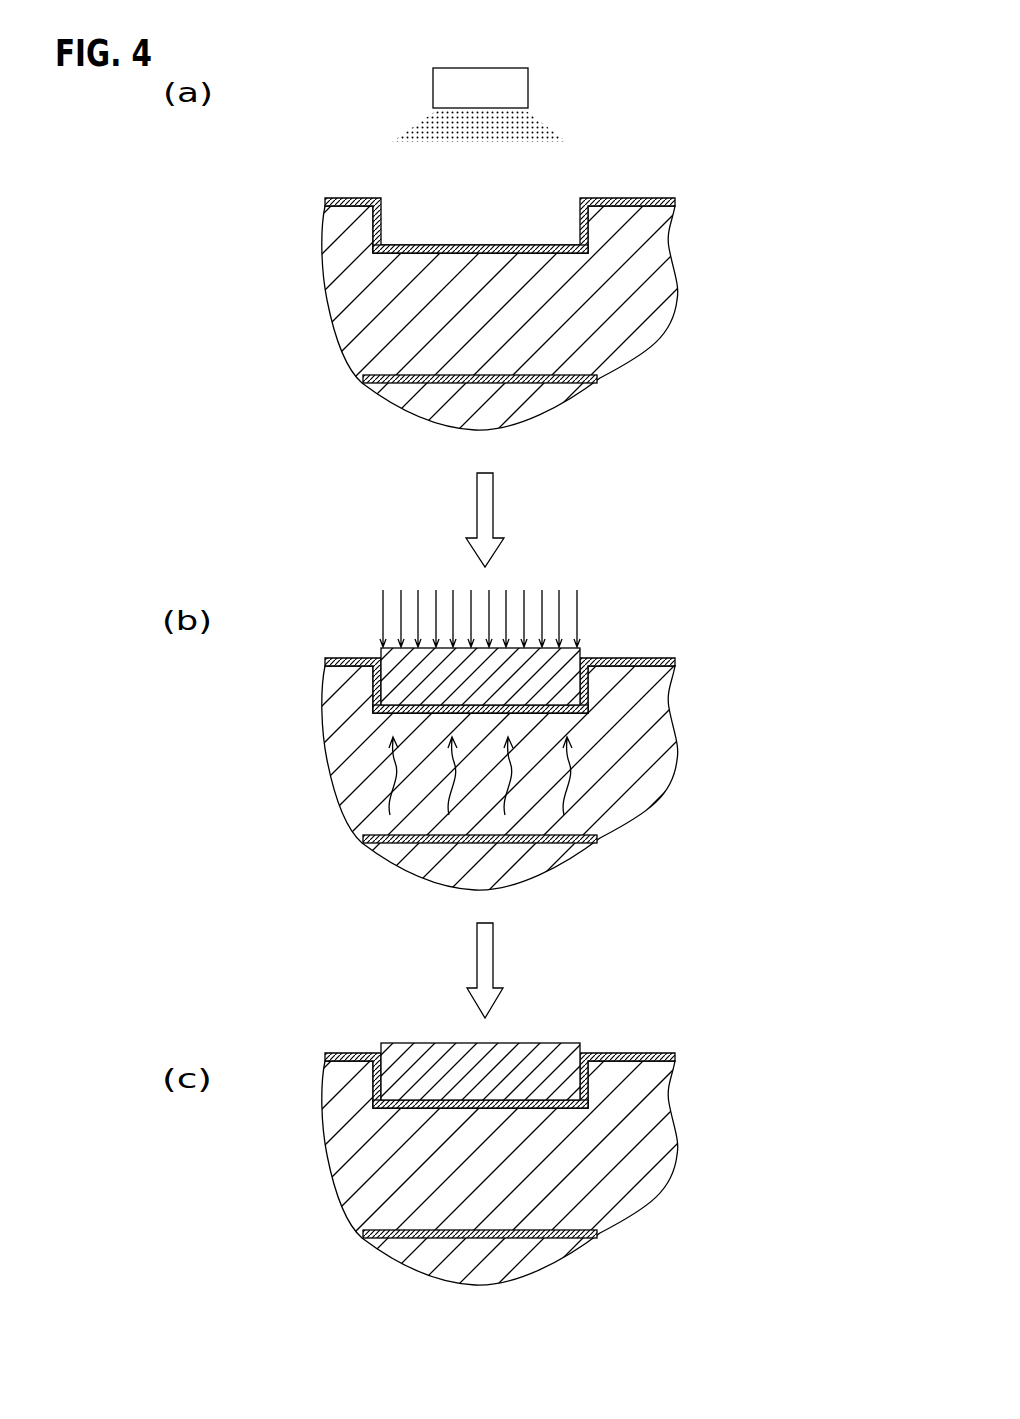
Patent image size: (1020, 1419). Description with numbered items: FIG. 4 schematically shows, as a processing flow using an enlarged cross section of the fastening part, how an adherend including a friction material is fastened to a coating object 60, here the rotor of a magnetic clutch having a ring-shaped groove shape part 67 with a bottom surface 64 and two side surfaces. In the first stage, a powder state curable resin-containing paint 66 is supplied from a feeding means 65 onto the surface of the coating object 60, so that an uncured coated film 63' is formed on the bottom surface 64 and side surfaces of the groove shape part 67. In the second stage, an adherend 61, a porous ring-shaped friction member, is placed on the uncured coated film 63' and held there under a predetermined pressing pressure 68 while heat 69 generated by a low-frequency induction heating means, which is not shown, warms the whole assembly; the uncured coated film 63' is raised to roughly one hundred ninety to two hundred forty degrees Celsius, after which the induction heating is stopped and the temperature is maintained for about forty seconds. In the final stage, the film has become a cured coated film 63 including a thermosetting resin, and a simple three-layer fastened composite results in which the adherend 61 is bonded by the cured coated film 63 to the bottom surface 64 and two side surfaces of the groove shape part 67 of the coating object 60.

The coating object 60 is at (653, 330).
The adherend 61 is at (562, 682).
The cured coated film 63 is at (449, 1059).
The uncured coated film 63' is at (418, 449).
The bottom surface 64 is at (487, 256).
The feeding means 65 is at (528, 88).
The powder state curable resin-containing paint 66 is at (548, 128).
The groove shape part 67 is at (376, 229).
The pressing pressure 68 is at (577, 613).
The heat 69 is at (568, 797).